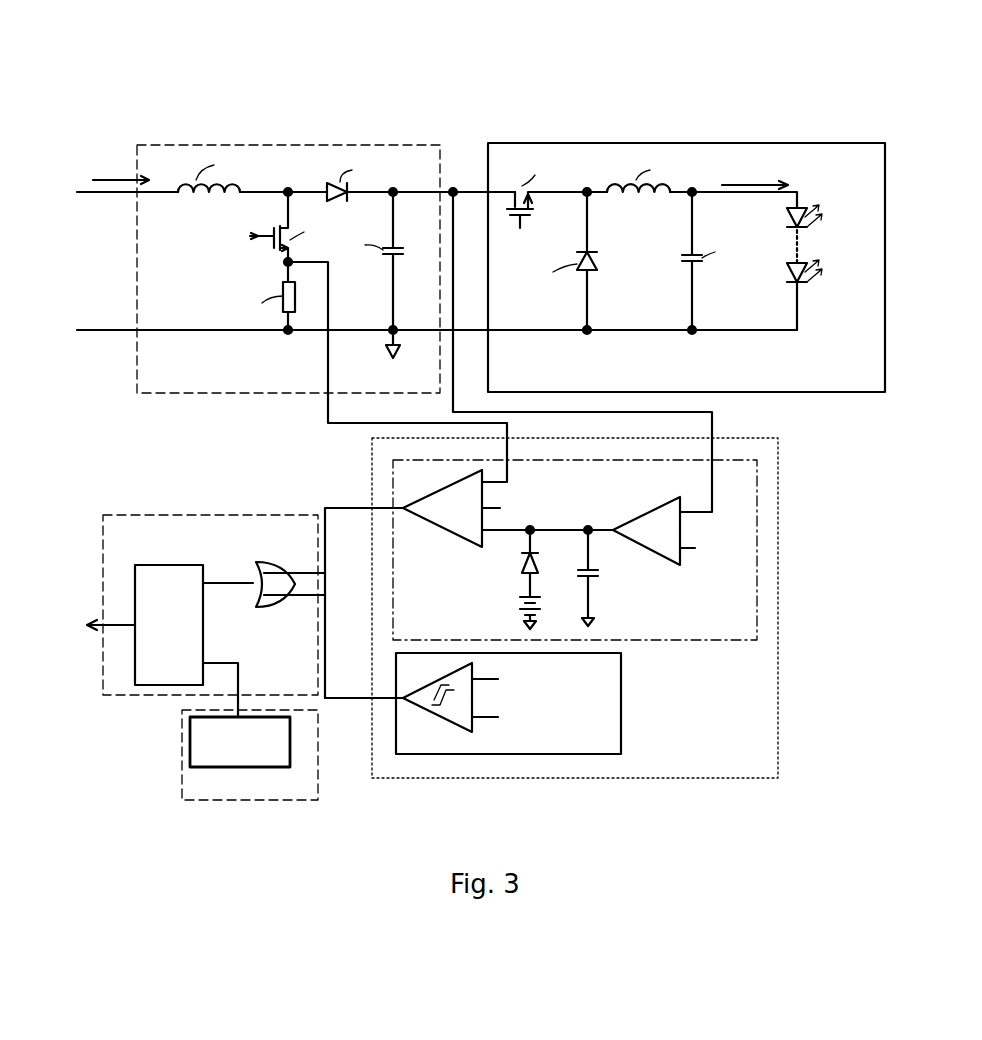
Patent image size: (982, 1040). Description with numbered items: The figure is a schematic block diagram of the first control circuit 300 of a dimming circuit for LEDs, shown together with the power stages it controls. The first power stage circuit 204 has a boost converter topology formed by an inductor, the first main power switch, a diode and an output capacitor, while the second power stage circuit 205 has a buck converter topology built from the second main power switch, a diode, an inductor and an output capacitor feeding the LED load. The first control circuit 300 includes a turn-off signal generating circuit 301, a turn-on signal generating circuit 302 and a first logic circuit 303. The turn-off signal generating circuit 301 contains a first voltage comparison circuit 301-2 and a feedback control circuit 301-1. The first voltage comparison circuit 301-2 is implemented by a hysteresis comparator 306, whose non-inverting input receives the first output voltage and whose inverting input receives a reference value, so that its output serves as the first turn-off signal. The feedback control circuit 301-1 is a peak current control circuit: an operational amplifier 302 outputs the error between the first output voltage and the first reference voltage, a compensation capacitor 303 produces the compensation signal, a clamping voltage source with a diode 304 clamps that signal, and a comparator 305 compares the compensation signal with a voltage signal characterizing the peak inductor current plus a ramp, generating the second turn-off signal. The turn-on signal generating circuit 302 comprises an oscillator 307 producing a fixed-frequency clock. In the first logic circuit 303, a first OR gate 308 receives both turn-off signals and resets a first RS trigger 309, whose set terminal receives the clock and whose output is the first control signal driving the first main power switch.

The first control circuit 300 is at (767, 70).
The first power stage circuit 204 is at (322, 313).
The second power stage circuit 205 is at (669, 327).
The turn-off signal generating circuit 301 is at (440, 619).
The feedback control circuit 301-1 is at (430, 630).
The first voltage comparison circuit 301-2 is at (473, 703).
The turn-on signal generating circuit 302 is at (640, 552).
The first logic circuit 303 is at (596, 577).
The diode 304 is at (522, 574).
The comparator 305 is at (455, 534).
The hysteresis comparator 306 is at (440, 706).
The oscillator 307 is at (240, 742).
The first OR gate 308 is at (272, 562).
The first RS trigger 309 is at (177, 565).